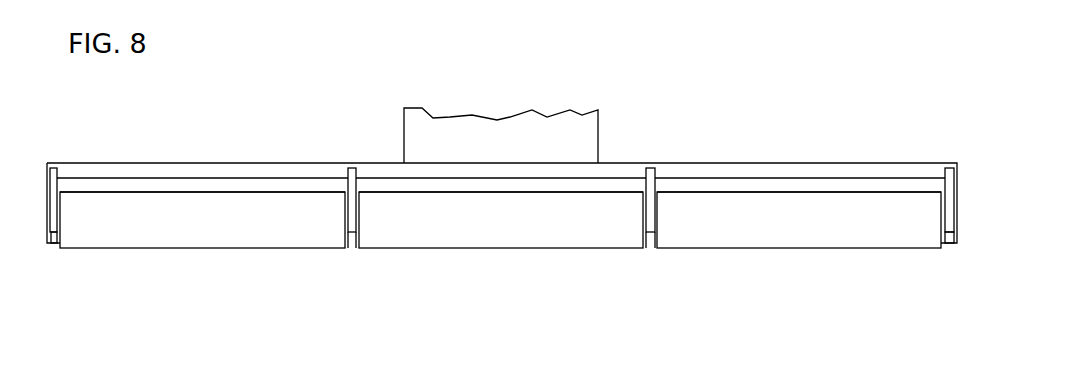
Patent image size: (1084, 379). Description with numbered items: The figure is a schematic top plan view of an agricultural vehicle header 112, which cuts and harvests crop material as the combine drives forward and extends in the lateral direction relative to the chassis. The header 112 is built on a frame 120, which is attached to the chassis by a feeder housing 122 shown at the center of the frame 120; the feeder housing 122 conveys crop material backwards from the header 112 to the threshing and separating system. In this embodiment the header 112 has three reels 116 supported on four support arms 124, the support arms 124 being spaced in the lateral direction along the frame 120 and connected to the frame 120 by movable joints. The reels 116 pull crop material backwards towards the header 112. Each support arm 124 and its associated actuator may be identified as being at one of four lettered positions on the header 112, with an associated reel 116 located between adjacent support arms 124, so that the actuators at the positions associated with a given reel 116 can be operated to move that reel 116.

The header 112 is at (501, 191).
The reel 116 is at (218, 238).
The frame 120 is at (272, 163).
The feeder housing 122 is at (510, 124).
The support arm 124 is at (53, 245).